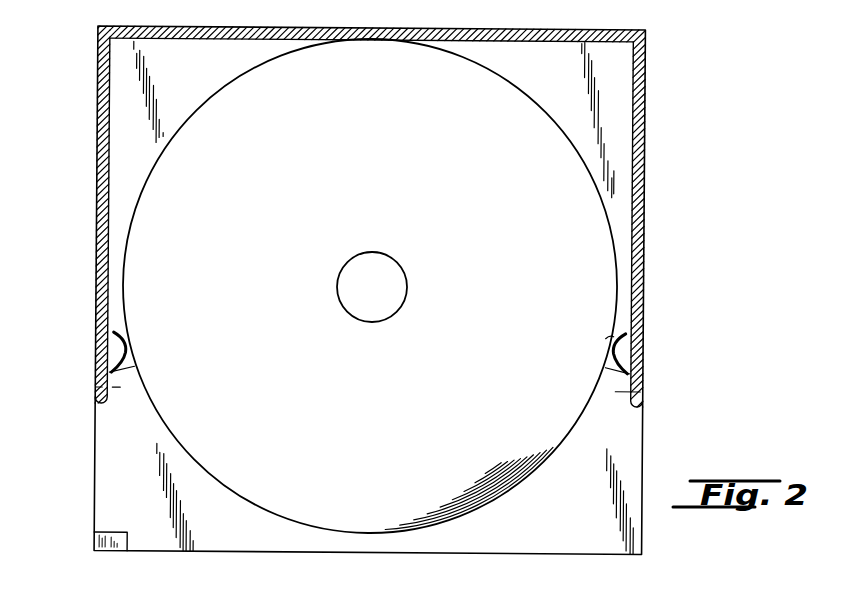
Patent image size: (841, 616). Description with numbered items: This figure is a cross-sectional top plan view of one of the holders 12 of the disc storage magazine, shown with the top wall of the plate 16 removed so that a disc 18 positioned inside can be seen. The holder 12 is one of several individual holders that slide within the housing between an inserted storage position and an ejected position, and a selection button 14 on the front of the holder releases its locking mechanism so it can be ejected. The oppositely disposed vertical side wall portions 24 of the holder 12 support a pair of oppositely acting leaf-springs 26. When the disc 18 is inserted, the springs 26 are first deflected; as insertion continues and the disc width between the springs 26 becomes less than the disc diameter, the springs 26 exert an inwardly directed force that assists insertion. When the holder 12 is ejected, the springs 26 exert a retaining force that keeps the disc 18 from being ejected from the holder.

The holder 12 is at (554, 556).
The selection button 14 is at (104, 554).
The plate 16 is at (618, 138).
The disc 18 is at (280, 501).
The vertical side wall portions 24 is at (101, 281).
The leaf-springs 26 is at (135, 368).